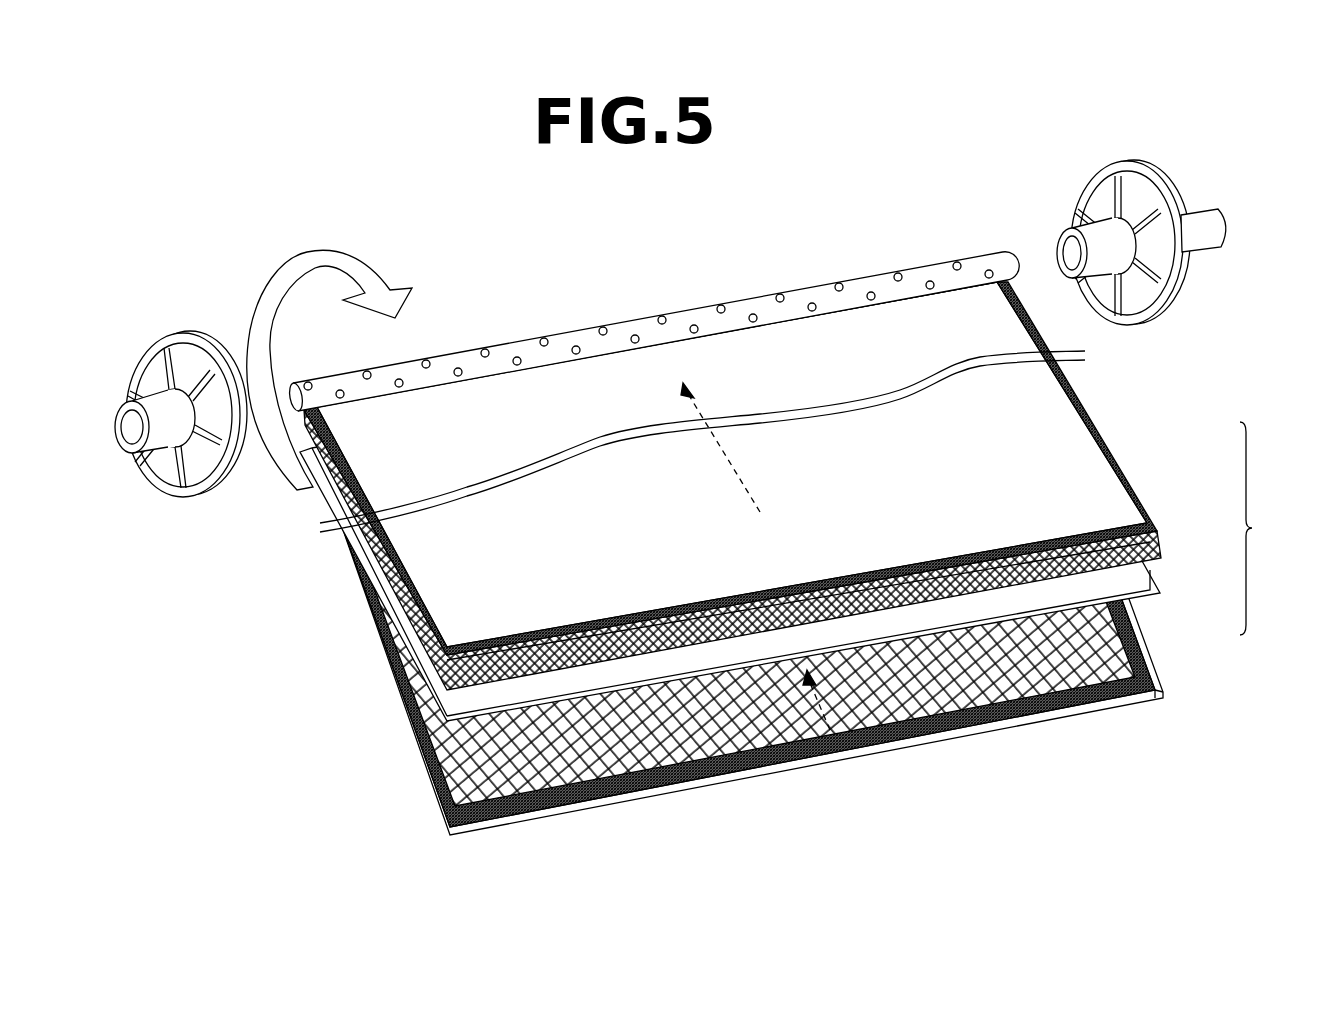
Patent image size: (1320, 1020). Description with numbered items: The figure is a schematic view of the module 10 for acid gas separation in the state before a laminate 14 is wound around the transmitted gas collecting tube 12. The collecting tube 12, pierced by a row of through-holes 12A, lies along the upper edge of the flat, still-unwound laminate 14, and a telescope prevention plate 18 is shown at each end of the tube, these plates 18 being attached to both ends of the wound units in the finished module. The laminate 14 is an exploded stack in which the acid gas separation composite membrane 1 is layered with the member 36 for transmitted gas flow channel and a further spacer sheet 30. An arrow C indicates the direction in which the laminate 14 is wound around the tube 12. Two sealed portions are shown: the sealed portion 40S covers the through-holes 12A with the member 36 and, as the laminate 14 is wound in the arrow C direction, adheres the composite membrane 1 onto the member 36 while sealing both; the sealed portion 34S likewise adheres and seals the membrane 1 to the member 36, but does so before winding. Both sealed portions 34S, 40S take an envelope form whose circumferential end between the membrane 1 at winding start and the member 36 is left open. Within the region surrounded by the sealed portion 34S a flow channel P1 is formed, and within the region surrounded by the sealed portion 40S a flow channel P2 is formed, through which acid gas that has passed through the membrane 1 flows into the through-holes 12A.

The acid gas separation composite membrane 1 is at (1133, 569).
The module for acid gas separation 10 is at (1150, 102).
The transmitted gas collecting tube 12 is at (692, 305).
The through-holes 12A is at (860, 280).
The laminate 14 is at (1263, 528).
The telescope prevention plates 18 is at (186, 497).
The first mesh spacer 30 is at (1143, 548).
The sealed portion 34S is at (1145, 660).
The member for transmitted gas flow channel 36 is at (1130, 608).
The sealed portion 40S is at (1125, 468).
The arrow C direction C is at (285, 252).
The flow channel P1 is at (853, 747).
The flow channel P2 is at (745, 482).